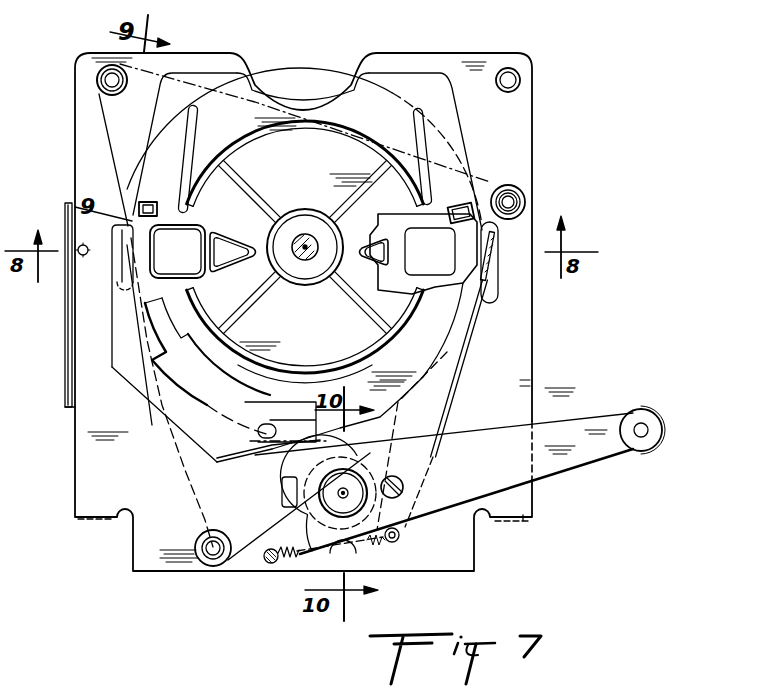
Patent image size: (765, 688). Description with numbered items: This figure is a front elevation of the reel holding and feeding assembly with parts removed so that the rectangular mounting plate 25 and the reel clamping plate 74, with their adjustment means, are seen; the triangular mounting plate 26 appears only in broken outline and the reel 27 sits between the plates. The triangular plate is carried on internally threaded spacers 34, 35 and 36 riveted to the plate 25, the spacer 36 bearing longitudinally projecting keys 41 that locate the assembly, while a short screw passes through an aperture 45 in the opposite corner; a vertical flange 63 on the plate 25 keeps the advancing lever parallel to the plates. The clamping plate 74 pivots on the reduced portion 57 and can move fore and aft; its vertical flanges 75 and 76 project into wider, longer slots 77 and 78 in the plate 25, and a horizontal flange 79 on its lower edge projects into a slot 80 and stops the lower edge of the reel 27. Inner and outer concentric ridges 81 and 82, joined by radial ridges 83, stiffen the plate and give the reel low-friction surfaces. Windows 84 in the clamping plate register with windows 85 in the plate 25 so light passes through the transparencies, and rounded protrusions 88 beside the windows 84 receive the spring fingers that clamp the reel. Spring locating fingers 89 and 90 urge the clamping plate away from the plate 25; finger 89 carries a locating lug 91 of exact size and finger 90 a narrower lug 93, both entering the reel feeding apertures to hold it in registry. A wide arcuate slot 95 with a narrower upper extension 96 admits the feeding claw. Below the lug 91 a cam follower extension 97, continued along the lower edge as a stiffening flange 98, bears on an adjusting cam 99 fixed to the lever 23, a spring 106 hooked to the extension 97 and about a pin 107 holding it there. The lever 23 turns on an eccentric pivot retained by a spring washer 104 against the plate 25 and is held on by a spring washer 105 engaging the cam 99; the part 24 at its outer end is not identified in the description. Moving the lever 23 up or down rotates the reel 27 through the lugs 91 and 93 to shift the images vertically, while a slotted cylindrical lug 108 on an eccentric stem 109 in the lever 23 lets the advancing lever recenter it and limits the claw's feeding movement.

The lever 23 is at (592, 458).
The pivot 24 is at (655, 440).
The rectangular mounting plate 25 is at (533, 132).
The triangular mounting plate 26 is at (183, 483).
The reel 27 is at (313, 88).
The spacer 34 is at (525, 206).
The spacer 35 is at (210, 560).
The spacer 36 is at (124, 88).
The keys 41 is at (100, 72).
The aperture 45 is at (513, 78).
The reduced portion 57 is at (318, 245).
The vertical flange 63 is at (66, 338).
The clamping plate 74 is at (433, 90).
The vertical flange 75 is at (117, 284).
The vertical flange 76 is at (491, 262).
The slot 77 is at (113, 258).
The slot 78 is at (497, 290).
The horizontal flange 79 is at (268, 452).
The slot 80 is at (277, 427).
The inner concentric ridge 81 is at (311, 284).
The outer concentric ridge 82 is at (310, 373).
The radial ridges 83 is at (262, 299).
The windows 84 is at (191, 233).
The windows 85 is at (418, 265).
The protrusions 88 is at (233, 259).
The spring locating finger 89 is at (459, 144).
The spring locating finger 90 is at (162, 129).
The locating lug 91 is at (470, 203).
The lug 93 is at (138, 206).
The arcuate slot 95 is at (203, 403).
The upper extension 96 is at (160, 326).
The cam follower extension 97 is at (398, 540).
The stiffening flange 98 is at (237, 468).
The adjusting cam 99 is at (368, 472).
The spring washer 104 is at (290, 491).
The spring washer 105 is at (343, 500).
The spring 106 is at (290, 558).
The pin 107 is at (266, 561).
The cylindrical lug 108 is at (403, 483).
The eccentric stem 109 is at (404, 487).